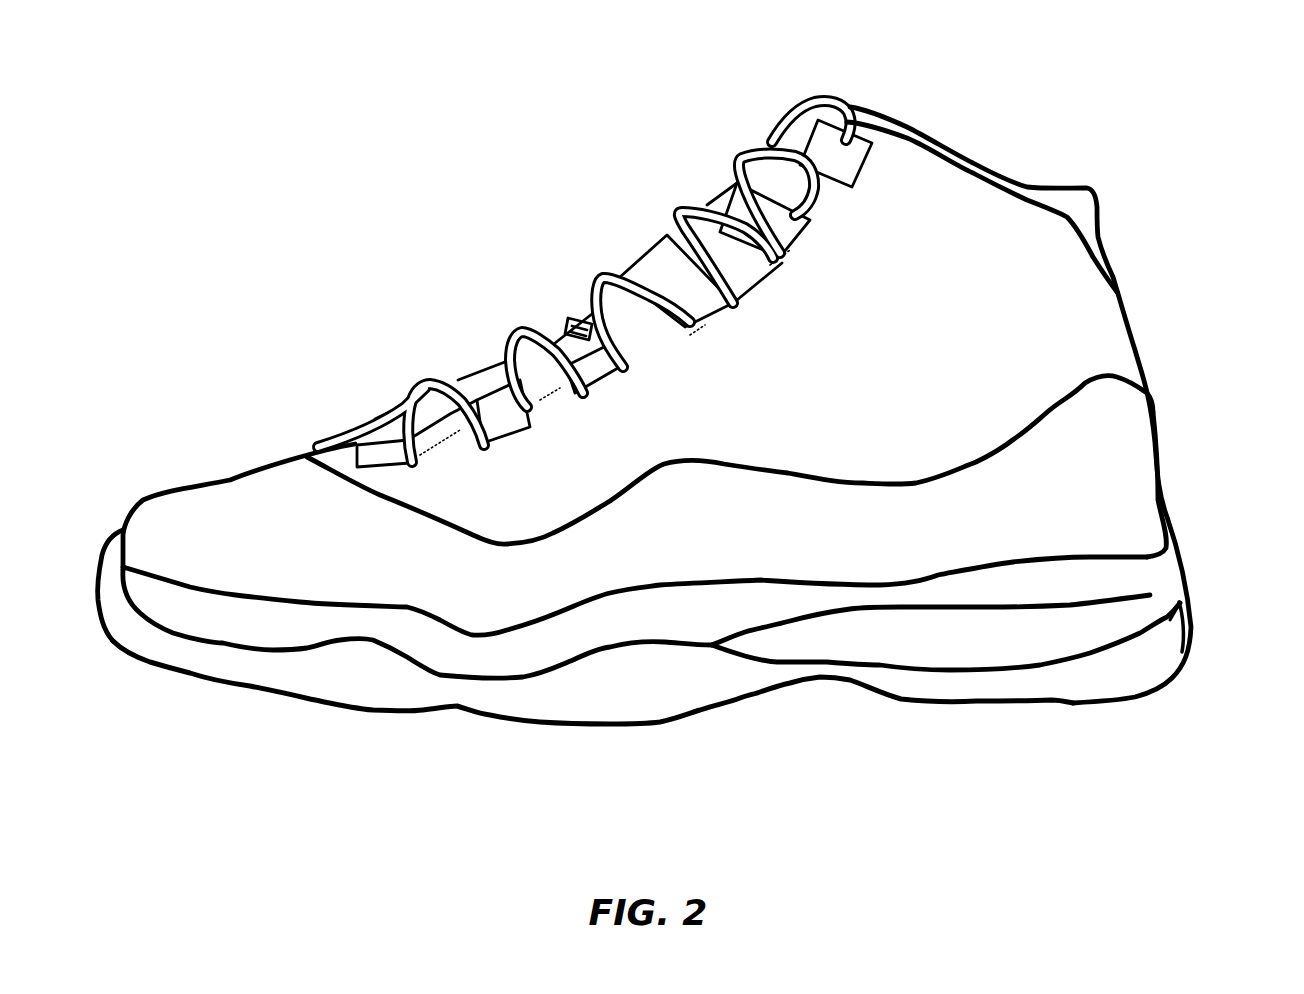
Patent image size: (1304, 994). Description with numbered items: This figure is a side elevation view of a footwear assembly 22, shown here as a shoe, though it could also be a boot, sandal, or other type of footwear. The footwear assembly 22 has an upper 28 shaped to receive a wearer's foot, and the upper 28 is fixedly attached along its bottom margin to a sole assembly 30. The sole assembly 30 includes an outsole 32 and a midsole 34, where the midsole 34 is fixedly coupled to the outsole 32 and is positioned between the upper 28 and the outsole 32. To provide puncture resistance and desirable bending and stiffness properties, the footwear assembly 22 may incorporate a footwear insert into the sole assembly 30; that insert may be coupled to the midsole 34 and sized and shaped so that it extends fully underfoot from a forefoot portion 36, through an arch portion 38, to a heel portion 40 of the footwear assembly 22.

The footwear assembly 22 is at (252, 178).
The upper 28 is at (947, 265).
The sole assembly 30 is at (1215, 560).
The outsole 32 is at (573, 730).
The midsole 34 is at (200, 603).
The forefoot portion 36 is at (237, 665).
The arch portion 38 is at (790, 640).
The heel portion 40 is at (1125, 675).